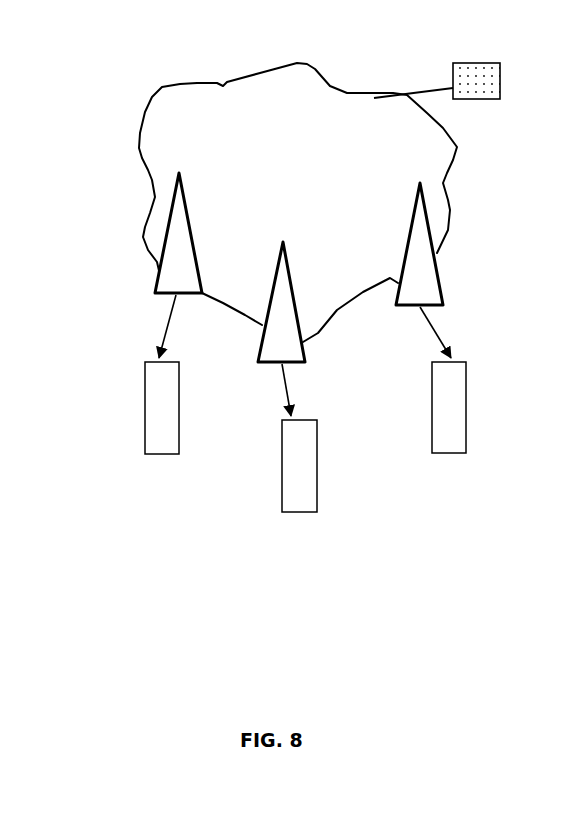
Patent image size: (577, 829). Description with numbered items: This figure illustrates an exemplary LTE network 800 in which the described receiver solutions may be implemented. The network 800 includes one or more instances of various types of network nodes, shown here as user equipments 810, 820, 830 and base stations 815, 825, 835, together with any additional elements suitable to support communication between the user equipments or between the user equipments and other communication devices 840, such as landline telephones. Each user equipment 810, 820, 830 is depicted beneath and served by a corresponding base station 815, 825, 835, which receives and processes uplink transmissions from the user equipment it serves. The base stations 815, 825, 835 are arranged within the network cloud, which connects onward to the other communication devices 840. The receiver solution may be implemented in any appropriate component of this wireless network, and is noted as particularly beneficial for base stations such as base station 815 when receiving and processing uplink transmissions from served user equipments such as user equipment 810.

The network 800 is at (275, 597).
The user equipment 810 is at (145, 430).
The base station 815 is at (167, 232).
The user equipment 820 is at (282, 500).
The base station 825 is at (292, 295).
The user equipment 830 is at (466, 432).
The base station 835 is at (433, 242).
The other communication devices 840 is at (476, 99).